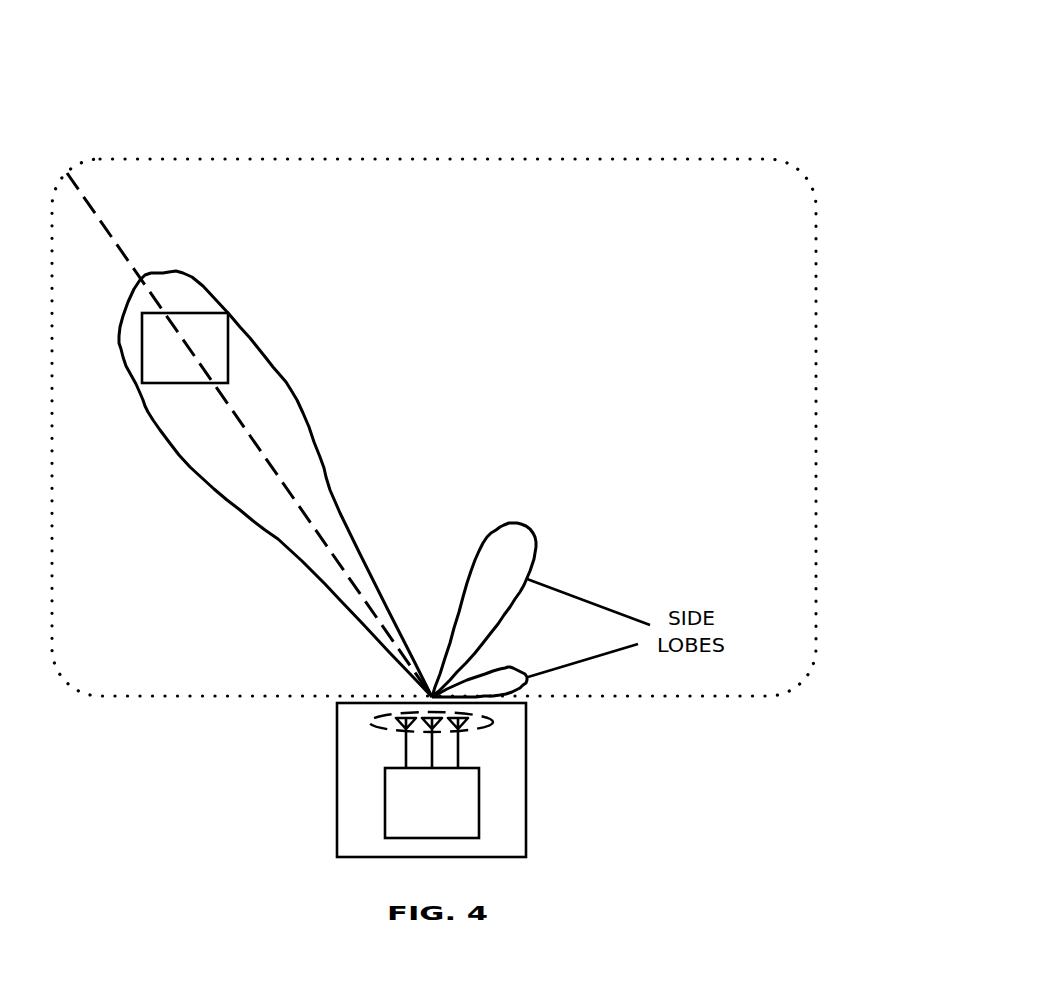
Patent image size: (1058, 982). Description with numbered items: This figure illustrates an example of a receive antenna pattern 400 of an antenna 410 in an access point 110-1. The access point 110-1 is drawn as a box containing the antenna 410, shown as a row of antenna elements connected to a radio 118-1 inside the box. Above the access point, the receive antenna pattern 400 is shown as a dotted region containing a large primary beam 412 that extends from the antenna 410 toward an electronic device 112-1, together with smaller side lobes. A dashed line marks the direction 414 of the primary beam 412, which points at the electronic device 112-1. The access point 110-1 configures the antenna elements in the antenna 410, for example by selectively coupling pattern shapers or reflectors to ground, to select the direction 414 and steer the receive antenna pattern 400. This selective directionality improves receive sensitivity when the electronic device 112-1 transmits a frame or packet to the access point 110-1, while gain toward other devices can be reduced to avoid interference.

The receive antenna pattern 400 is at (739, 159).
The primary beam 412 is at (192, 277).
The electronic device 112-1 is at (212, 371).
The direction 414 is at (283, 486).
The antenna 410 is at (490, 725).
The radio 118-1 is at (458, 826).
The access point 110-1 is at (526, 780).